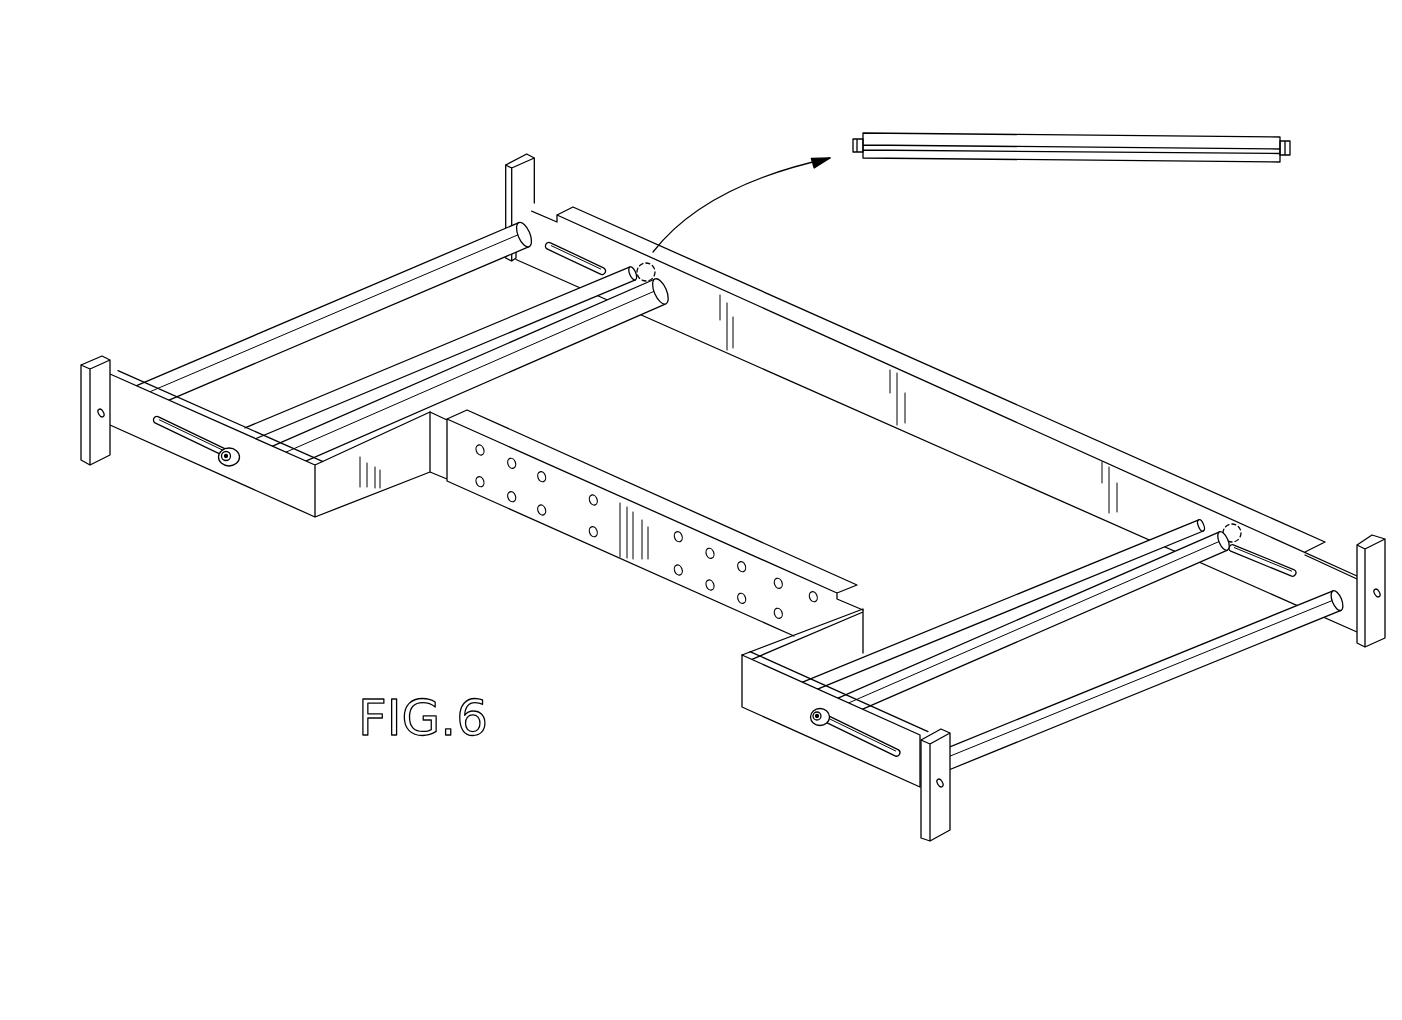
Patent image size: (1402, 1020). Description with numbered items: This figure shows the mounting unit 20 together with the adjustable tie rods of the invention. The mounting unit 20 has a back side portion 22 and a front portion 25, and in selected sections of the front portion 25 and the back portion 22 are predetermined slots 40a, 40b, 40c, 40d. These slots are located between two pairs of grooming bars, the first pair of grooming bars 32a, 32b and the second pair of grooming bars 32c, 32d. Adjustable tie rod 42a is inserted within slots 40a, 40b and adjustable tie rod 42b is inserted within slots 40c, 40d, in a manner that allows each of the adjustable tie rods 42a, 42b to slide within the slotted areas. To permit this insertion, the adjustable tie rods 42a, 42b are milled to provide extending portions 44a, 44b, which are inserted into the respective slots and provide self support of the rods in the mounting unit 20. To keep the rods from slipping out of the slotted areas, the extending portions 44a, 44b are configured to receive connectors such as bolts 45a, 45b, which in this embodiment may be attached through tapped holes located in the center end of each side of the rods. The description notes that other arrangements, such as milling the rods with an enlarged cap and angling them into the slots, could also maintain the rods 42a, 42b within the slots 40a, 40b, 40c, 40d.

The mounting unit 20 is at (733, 466).
The back side portion 22 is at (843, 333).
The front portion 25 is at (603, 570).
The grooming bar 32a is at (390, 256).
The grooming bar 32b is at (521, 359).
The grooming bar 32c is at (1023, 600).
The grooming bar 32d is at (1100, 710).
The slot 40a is at (177, 442).
The slot 40b is at (576, 247).
The slot 40c is at (870, 742).
The slot 40d is at (1252, 556).
The adjustable tie rod 42a is at (458, 347).
The adjustable tie rod 42b is at (1113, 588).
The extending portion 44a is at (860, 134).
The extending portion 44b is at (1290, 142).
The bolt 45a is at (223, 465).
The bolt 45b is at (654, 264).